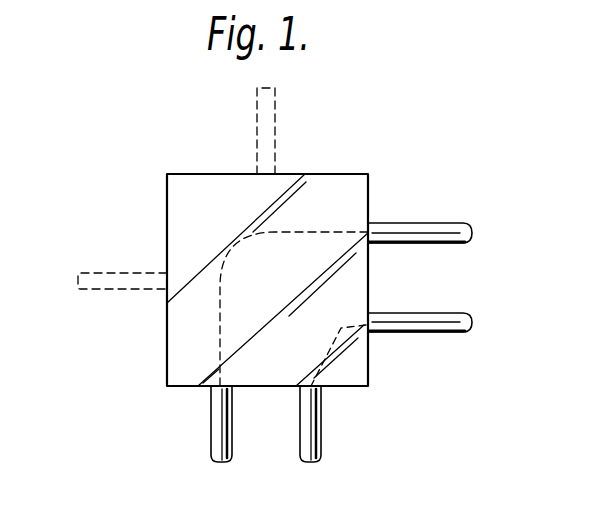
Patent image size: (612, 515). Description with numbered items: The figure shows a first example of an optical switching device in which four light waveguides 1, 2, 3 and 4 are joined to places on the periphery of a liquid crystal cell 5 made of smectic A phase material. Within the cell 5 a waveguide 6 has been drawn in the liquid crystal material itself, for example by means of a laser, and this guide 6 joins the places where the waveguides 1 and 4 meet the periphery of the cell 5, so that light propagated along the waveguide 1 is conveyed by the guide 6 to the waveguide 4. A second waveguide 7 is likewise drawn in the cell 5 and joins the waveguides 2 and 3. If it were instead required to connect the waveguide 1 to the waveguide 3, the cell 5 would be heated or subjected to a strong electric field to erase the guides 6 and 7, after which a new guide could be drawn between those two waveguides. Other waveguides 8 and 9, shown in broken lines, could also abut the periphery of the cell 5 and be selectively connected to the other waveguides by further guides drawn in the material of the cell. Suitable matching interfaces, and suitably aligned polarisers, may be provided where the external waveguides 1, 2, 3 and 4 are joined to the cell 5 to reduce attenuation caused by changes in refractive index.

The light waveguide 1 is at (218, 425).
The light waveguide 2 is at (318, 432).
The light waveguide 3 is at (465, 312).
The light waveguide 4 is at (458, 222).
The liquid crystal cell 5 is at (368, 198).
The waveguide 6 is at (290, 232).
The second waveguide 7 is at (337, 327).
The waveguide 8 is at (126, 291).
The waveguide 9 is at (279, 103).